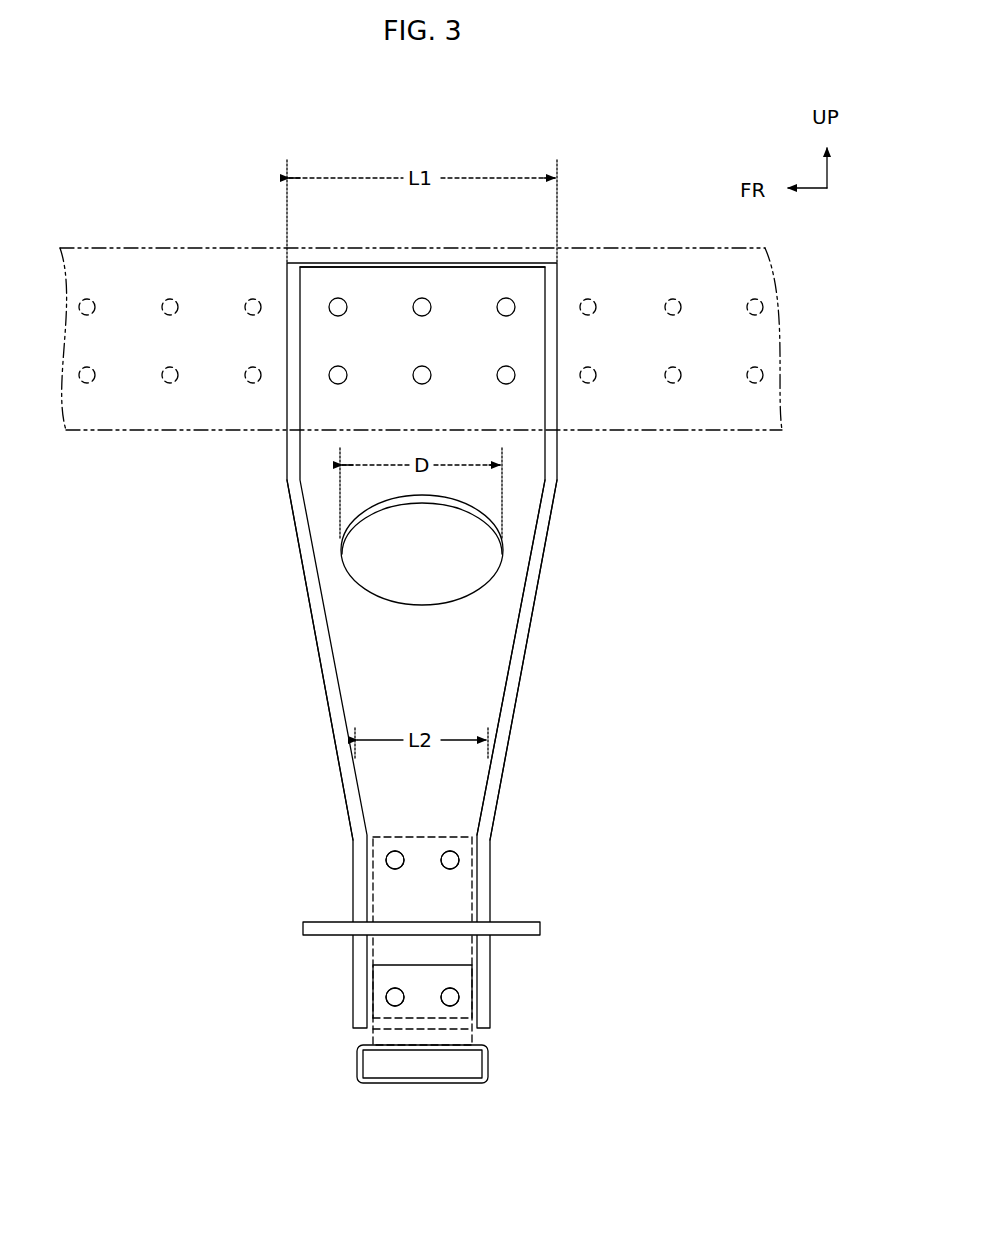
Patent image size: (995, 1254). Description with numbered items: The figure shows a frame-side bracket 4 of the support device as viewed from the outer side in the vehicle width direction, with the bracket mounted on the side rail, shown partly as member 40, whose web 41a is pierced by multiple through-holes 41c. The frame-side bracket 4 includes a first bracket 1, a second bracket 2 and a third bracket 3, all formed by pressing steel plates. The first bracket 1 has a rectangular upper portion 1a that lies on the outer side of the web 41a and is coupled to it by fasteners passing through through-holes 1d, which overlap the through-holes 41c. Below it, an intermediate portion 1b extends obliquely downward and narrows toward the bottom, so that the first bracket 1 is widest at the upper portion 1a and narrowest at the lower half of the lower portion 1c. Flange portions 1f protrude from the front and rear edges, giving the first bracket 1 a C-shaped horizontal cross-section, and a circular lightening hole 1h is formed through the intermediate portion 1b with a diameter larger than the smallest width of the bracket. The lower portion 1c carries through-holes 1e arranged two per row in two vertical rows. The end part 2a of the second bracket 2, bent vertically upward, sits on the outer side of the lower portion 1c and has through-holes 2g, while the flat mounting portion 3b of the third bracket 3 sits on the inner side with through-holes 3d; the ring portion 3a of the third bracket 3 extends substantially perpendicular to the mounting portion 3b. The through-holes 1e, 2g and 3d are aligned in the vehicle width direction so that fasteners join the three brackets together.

The first bracket 1 is at (256, 530).
The upper portion 1a is at (527, 337).
The intermediate portion 1b is at (518, 555).
The lower portion 1c is at (452, 890).
The through-holes 1d is at (420, 304).
The through-holes 1e is at (448, 851).
The flange portions 1f is at (322, 637).
The lightening hole 1h is at (387, 597).
The second bracket 2 is at (443, 1024).
The end part 2a is at (385, 978).
The through-holes 2g is at (483, 982).
The third bracket 3 is at (363, 941).
The ring portion 3a is at (310, 928).
The mounting portion 3b is at (373, 875).
The through-holes 3d is at (495, 880).
The frame-side bracket 4 is at (608, 192).
The frame member 40 is at (233, 240).
The web 41a is at (110, 282).
The through-holes 41c is at (172, 299).